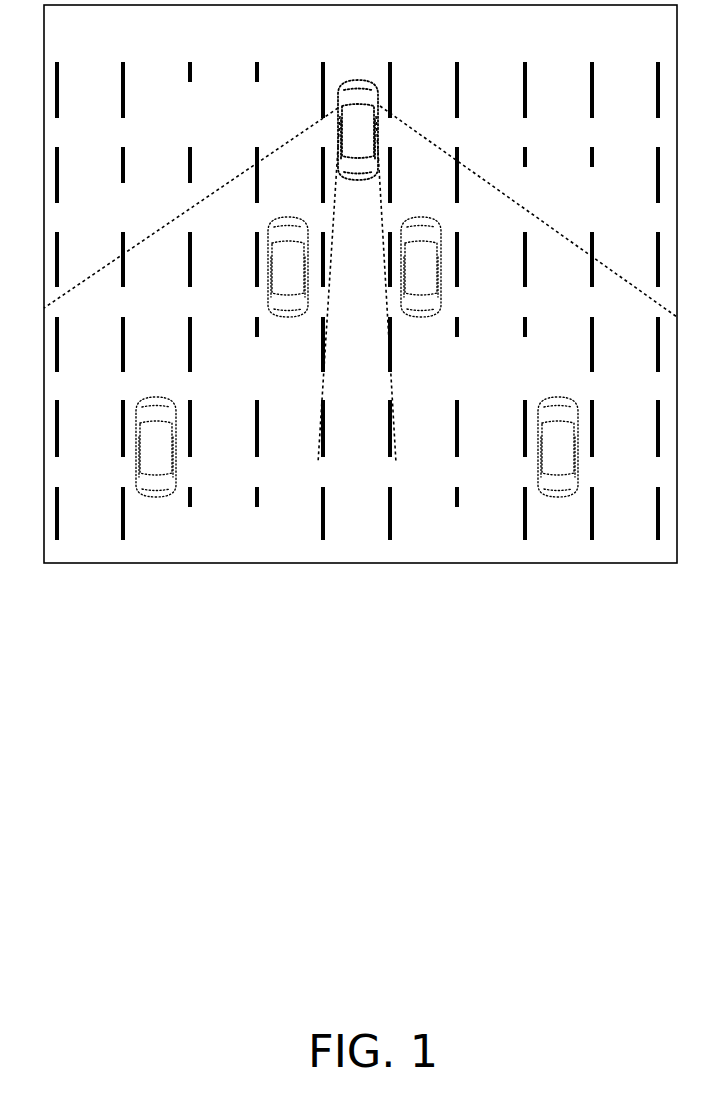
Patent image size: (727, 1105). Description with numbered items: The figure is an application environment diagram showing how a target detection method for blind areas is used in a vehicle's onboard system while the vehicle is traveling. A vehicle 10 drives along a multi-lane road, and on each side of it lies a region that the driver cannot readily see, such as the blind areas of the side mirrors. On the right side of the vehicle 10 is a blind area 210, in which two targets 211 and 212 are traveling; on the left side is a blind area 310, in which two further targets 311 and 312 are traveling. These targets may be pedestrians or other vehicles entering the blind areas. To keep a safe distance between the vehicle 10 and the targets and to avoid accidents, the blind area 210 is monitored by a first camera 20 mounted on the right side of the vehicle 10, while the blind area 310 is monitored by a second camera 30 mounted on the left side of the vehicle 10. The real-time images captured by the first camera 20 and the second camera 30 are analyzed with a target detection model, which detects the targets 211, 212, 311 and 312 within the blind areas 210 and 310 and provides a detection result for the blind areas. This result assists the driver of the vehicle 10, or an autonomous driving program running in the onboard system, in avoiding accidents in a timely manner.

The vehicle 10 is at (358, 78).
The first camera 20 is at (380, 110).
The second camera 30 is at (336, 110).
The blind area 210 is at (484, 250).
The target 211 is at (422, 320).
The target 212 is at (560, 502).
The blind area 310 is at (242, 265).
The target 311 is at (289, 320).
The target 312 is at (153, 502).